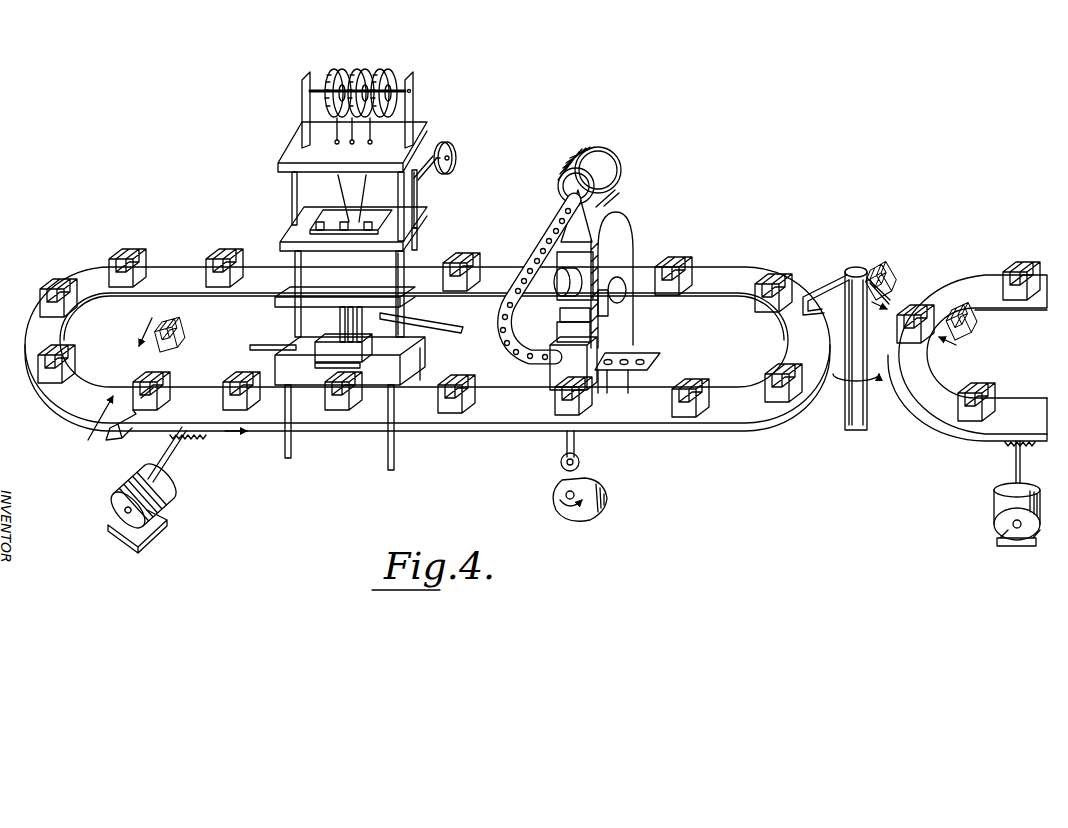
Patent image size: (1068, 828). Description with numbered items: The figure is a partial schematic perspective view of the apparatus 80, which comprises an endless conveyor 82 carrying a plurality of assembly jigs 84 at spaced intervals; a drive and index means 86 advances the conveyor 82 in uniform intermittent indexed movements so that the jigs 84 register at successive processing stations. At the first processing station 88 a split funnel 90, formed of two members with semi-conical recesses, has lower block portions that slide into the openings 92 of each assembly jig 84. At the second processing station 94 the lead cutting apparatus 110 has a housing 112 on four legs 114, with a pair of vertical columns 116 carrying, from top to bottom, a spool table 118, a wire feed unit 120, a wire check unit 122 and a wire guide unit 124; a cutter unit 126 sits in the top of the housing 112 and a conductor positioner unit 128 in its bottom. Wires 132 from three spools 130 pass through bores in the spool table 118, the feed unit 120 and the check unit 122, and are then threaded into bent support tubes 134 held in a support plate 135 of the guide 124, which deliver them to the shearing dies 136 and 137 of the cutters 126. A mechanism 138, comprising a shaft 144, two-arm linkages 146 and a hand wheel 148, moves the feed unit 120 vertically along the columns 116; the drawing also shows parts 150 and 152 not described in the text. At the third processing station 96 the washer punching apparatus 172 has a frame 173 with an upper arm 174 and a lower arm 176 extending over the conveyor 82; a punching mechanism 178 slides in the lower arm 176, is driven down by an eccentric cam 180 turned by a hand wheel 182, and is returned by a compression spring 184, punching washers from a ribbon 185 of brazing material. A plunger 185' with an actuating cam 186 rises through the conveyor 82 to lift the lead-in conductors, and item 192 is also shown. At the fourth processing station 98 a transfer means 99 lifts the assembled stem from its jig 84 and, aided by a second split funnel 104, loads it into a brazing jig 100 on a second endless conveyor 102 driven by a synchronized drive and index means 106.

The apparatus 80 is at (177, 265).
The endless conveyor 82 is at (96, 265).
The assembly jigs 84 is at (40, 284).
The drive and index means 86 is at (166, 500).
The first processing station 88 is at (172, 364).
The split funnel 90 is at (180, 331).
The openings 92 is at (165, 383).
The second processing station 94 is at (416, 101).
The third processing station 96 is at (592, 270).
The fourth processing station 98 is at (862, 268).
The transfer means 99 is at (830, 279).
The brazing jig 100 is at (911, 300).
The second endless conveyor 102 is at (935, 436).
The second split funnel 104 is at (893, 276).
The drive and index means 106 is at (990, 506).
The lead cutting apparatus 110 is at (286, 160).
The housing 112 is at (413, 349).
The legs 114 is at (421, 373).
The vertical columns 116 is at (416, 241).
The spool table 118 is at (425, 126).
The wire feed unit 120 is at (430, 217).
The wire check unit 122 is at (410, 259).
The wire guide unit 124 is at (282, 301).
The cutter unit 126 is at (310, 374).
The conductor positioner unit 128 is at (328, 412).
The spools 130 is at (386, 70).
The wires 132 is at (352, 144).
The support tubes 134 is at (354, 359).
The support plate 135 is at (404, 311).
The shearing die 136 is at (368, 353).
The shearing die 137 is at (348, 365).
The mechanism 138 is at (462, 151).
The shaft 144 is at (428, 152).
The two-arm linkages 146 is at (425, 188).
The hand wheel 148 is at (458, 161).
The rod 150 is at (470, 320).
The bar 152 is at (259, 340).
The washer punching apparatus 172 is at (636, 239).
The frame 173 is at (632, 216).
The upper arm 174 is at (591, 276).
The lower arm 176 is at (550, 381).
The punching mechanism 178 is at (560, 334).
The eccentric cam 180 is at (579, 262).
The hand wheel 182 is at (628, 301).
The compression spring 184 is at (612, 323).
The ribbon 185 is at (536, 280).
The plunger 185' is at (600, 450).
The actuating cam 186 is at (598, 491).
The block 192 is at (560, 319).